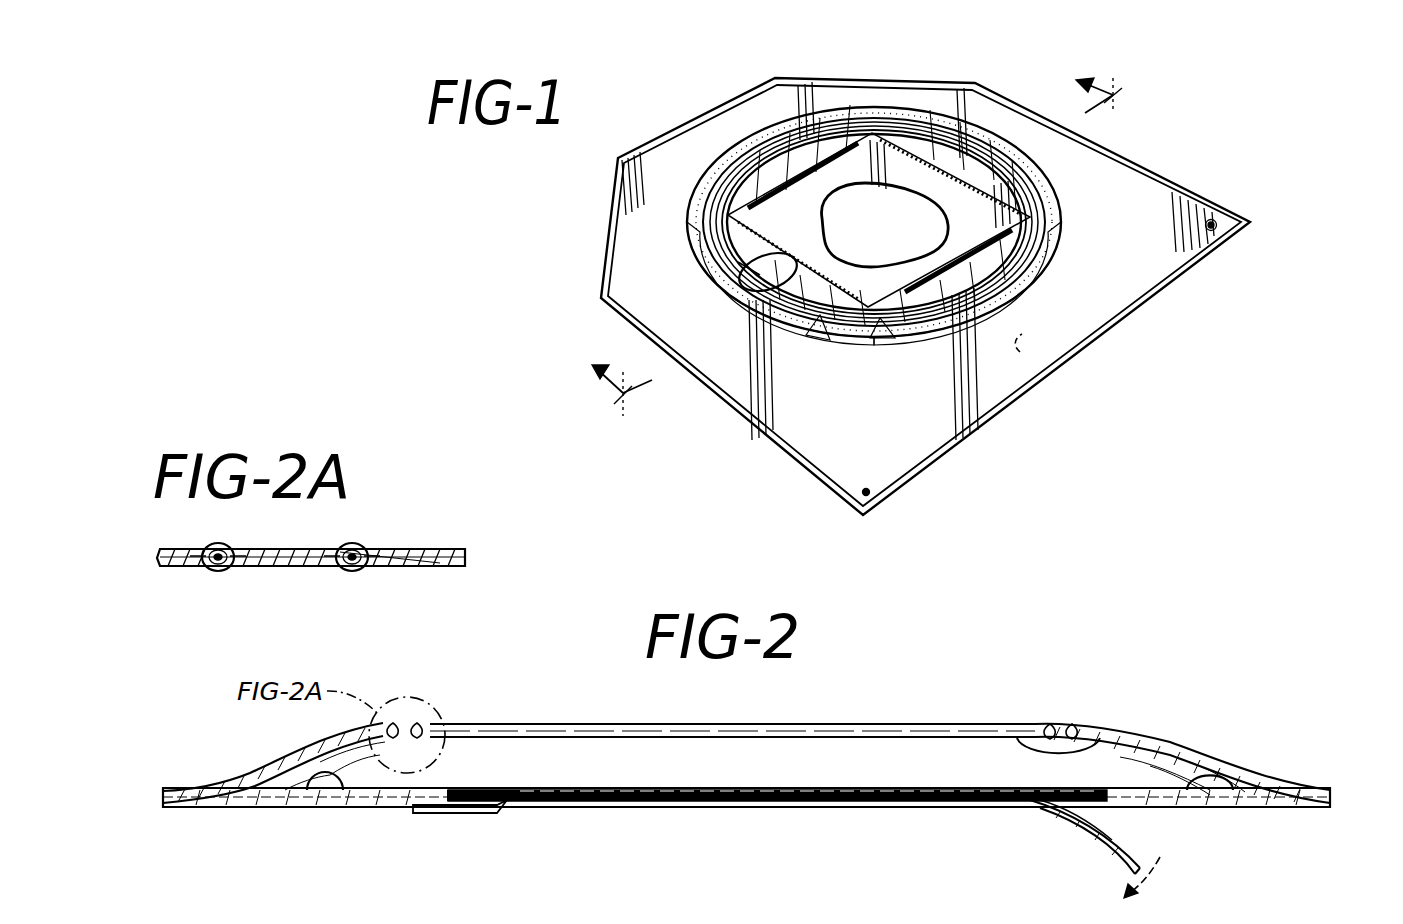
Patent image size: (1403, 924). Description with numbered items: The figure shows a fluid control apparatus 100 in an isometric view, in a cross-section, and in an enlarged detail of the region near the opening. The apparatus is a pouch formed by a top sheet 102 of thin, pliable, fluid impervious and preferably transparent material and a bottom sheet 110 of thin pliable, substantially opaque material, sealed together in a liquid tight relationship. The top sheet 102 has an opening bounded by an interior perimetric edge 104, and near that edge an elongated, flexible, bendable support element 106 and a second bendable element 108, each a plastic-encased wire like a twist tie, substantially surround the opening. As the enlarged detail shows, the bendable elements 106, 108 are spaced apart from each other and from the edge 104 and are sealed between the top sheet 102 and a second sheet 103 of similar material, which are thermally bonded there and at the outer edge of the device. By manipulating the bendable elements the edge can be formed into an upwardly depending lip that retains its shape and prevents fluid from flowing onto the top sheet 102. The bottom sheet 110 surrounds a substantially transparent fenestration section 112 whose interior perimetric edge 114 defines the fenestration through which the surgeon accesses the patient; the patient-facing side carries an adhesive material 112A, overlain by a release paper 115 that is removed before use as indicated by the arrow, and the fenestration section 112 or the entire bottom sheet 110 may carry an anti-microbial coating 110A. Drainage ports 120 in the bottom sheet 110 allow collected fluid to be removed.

In FIG. 1, the fluid control apparatus 100 is at (1240, 160).
In FIG. 1, the top sheet 102 is at (1108, 198).
In FIG. 2A, the top sheet 102 is at (452, 550).
In FIG. 2, the top sheet 102 is at (1183, 743).
In FIG. 2A, the second sheet 103 is at (445, 567).
In FIG. 2, the second sheet 103 is at (1010, 730).
In FIG. 1, the interior perimetric edge 104 is at (740, 270).
In FIG. 2A, the interior perimetric edge 104 is at (466, 557).
In FIG. 2, the interior perimetric edge 104 is at (447, 725).
In FIG. 1, the bendable support element 106 is at (897, 300).
In FIG. 2A, the bendable support element 106 is at (215, 568).
In FIG. 2, the bendable support element 106 is at (1075, 725).
In FIG. 1, the second bendable element 108 is at (832, 312).
In FIG. 2A, the second bendable element 108 is at (360, 550).
In FIG. 2, the second bendable element 108 is at (1048, 725).
In FIG. 1, the bottom sheet 110 is at (993, 267).
In FIG. 2, the bottom sheet 110 is at (297, 806).
In FIG. 1, the anti-microbial coating 110A is at (1020, 352).
In FIG. 2, the anti-microbial coating 110A is at (325, 807).
In FIG. 1, the fenestration section 112 is at (934, 176).
In FIG. 2, the fenestration section 112 is at (532, 790).
In FIG. 1, the adhesive material 112A is at (920, 258).
In FIG. 2, the adhesive material 112A is at (513, 806).
In FIG. 1, the interior perimetric edge of fenestration section 114 is at (822, 218).
In FIG. 2, the interior perimetric edge of fenestration section 114 is at (585, 790).
In FIG. 2, the release paper 115 is at (1090, 838).
In FIG. 1, the drainage port 120 is at (1215, 231).